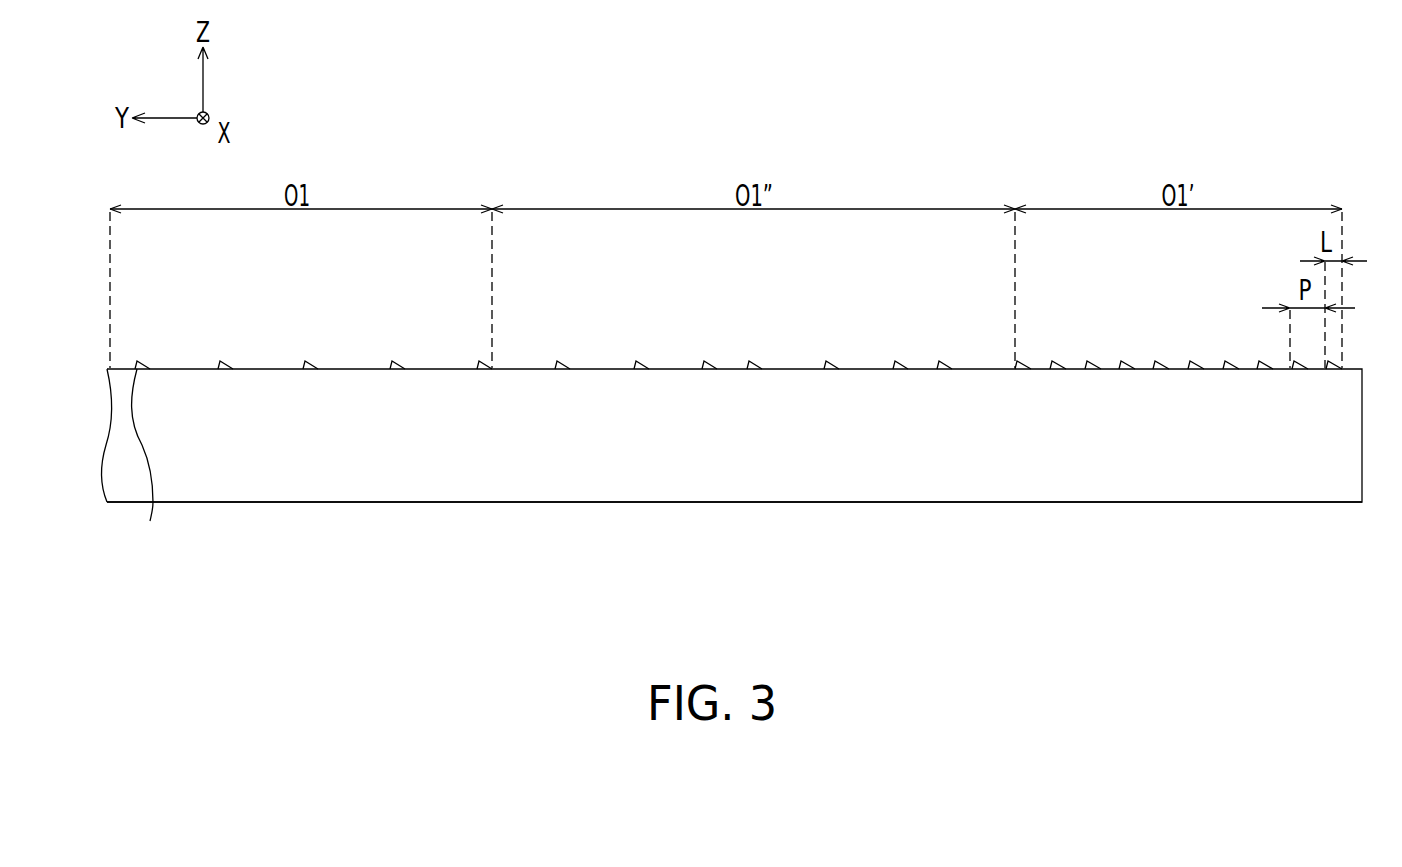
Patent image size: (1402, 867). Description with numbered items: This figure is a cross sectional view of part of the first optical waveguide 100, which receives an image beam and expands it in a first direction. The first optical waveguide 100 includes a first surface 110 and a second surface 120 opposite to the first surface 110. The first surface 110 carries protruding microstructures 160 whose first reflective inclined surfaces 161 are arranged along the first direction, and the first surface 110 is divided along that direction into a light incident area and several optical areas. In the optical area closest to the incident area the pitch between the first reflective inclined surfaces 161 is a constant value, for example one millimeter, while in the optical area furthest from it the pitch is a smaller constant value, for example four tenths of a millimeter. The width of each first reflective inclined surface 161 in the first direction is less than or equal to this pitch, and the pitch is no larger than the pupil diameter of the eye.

The first optical waveguide 100 is at (1297, 498).
The first surface 110 is at (1180, 383).
The second surface 120 is at (804, 516).
The protruding microstructures 160 is at (134, 460).
The first reflective inclined surface 161 is at (142, 350).